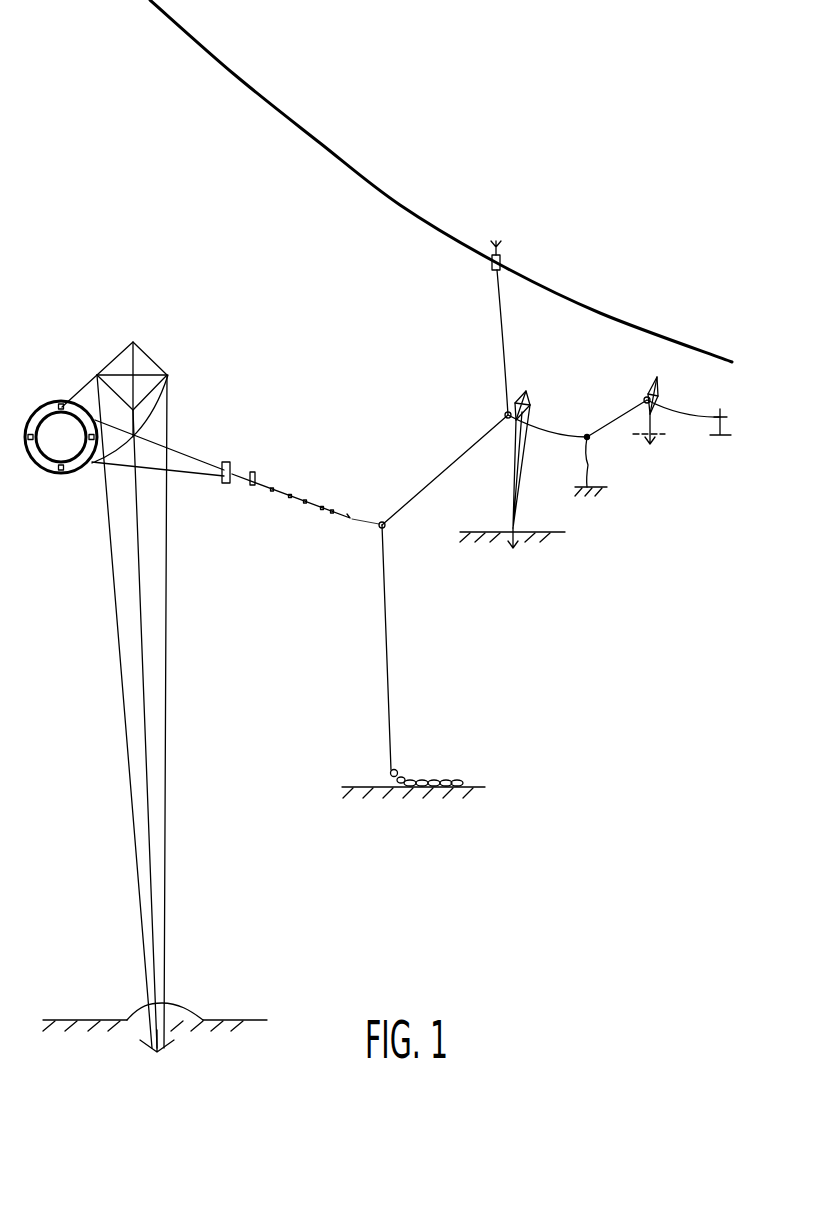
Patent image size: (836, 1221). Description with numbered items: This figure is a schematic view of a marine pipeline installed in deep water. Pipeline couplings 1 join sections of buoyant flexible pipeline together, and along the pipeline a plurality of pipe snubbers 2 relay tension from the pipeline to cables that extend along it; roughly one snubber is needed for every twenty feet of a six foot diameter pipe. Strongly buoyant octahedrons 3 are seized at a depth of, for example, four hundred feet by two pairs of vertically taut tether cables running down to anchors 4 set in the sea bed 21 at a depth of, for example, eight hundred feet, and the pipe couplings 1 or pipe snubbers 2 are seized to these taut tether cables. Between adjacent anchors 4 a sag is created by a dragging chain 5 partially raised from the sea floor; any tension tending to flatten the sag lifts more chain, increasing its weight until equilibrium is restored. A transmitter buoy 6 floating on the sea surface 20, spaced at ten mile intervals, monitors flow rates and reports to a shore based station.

The pipeline coupling 1 is at (58, 476).
The pipe snubber 2 is at (252, 486).
The buoyant octahedron 3 is at (157, 363).
The anchor 4 is at (170, 1044).
The dragging chain 5 is at (430, 779).
The transmitter buoy 6 is at (502, 258).
The sea surface 20 is at (322, 143).
The sea bed 21 is at (227, 1020).